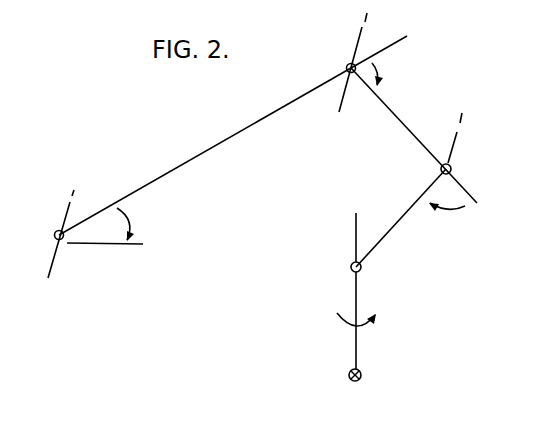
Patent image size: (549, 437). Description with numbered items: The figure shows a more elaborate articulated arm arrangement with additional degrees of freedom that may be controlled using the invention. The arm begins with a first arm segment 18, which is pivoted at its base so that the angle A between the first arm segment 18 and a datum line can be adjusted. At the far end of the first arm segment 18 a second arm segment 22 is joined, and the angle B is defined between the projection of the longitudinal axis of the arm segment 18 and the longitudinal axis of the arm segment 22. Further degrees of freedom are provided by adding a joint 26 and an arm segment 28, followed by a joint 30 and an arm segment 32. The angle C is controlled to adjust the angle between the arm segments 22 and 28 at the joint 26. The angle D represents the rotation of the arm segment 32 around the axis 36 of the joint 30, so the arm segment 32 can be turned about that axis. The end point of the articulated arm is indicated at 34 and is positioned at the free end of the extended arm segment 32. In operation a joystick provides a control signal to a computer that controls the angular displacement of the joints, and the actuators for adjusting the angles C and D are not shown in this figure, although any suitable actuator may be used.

The first arm segment 18 is at (215, 145).
The arm segment 22 is at (420, 134).
The joint 26 is at (451, 168).
The arm segment 28 is at (412, 210).
The joint 30 is at (350, 267).
The arm segment 32 is at (355, 293).
The end point 34 is at (362, 377).
The axis 36 is at (355, 235).
The angle A is at (129, 217).
The angle B is at (382, 77).
The angle C is at (447, 213).
The angle D is at (337, 322).